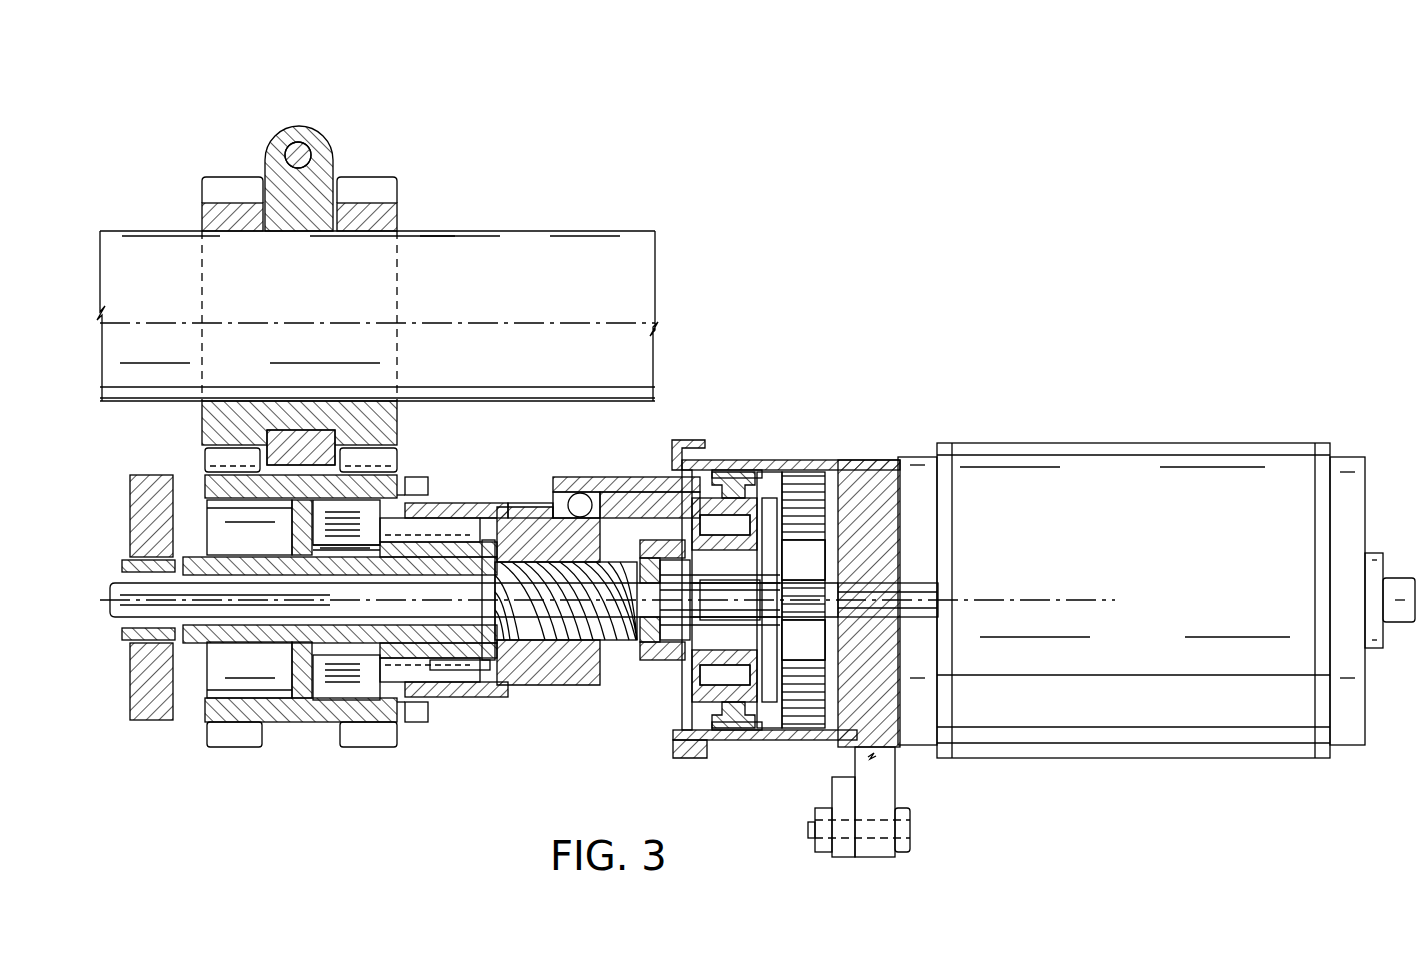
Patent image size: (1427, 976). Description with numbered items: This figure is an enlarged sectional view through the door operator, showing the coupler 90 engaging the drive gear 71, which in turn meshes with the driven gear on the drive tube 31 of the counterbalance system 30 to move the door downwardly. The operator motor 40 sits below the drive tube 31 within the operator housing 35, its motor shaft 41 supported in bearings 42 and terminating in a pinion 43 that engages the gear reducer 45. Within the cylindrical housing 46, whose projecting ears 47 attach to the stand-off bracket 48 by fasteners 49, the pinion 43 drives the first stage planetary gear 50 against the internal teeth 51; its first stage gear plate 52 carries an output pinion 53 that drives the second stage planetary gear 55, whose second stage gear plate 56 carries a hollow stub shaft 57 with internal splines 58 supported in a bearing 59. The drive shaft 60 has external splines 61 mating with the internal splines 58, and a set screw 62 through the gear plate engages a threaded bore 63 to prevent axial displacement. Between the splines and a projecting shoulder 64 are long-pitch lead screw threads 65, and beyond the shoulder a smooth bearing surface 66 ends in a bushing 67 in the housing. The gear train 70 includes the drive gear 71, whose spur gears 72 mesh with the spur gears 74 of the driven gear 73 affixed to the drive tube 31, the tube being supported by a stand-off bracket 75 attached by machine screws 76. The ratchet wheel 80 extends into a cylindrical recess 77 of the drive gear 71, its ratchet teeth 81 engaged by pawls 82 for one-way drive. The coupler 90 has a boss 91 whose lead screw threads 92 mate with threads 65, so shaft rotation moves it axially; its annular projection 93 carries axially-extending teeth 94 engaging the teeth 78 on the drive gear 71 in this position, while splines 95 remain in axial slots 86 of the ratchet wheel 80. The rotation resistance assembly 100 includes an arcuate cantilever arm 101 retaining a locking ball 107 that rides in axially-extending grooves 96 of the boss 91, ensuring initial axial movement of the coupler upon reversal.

The counterbalance system 30 is at (630, 229).
The drive tube 31 is at (568, 238).
The operator housing 35 is at (142, 705).
The operator motor 40 is at (1158, 440).
The motor shaft 41 is at (890, 586).
The bearings 42 is at (890, 568).
The pinion 43 is at (890, 615).
The gear reducer 45 is at (737, 745).
The housing 46 is at (727, 741).
The projecting ears 47 is at (880, 806).
The stand-off bracket 48 is at (838, 793).
The fasteners 49 is at (900, 840).
The first stage planetary gear 50 is at (812, 495).
The internal teeth 51 is at (765, 478).
The first stage gear plate 52 is at (770, 530).
The output pinion 53 is at (855, 530).
The second stage planetary gear 55 is at (737, 472).
The second stage gear plate 56 is at (716, 498).
The stub shaft 57 is at (667, 668).
The internal splines 58 is at (645, 650).
The bearing 59 is at (668, 555).
The drive shaft 60 is at (228, 620).
The external splines 61 is at (648, 548).
The set screw 62 is at (708, 600).
The threaded bore 63 is at (652, 552).
The shoulder 64 is at (548, 582).
The lead screw threads 65 is at (522, 573).
The bearing surface 66 is at (262, 618).
The bushing 67 is at (125, 632).
The gear train 70 is at (183, 455).
The drive gear 71 is at (302, 725).
The spur gears 72 is at (236, 742).
The driven gear 73 is at (398, 174).
The spur gears 74 is at (232, 182).
The stand-off bracket 75 is at (318, 132).
The machine screws 76 is at (302, 148).
The cylindrical recess 77 is at (399, 724).
The axially-extending teeth 78 is at (412, 500).
The ratchet wheel 80 is at (437, 532).
The ratchet teeth 81 is at (336, 658).
The pawls 82 is at (337, 517).
The axial slots 86 is at (467, 662).
The coupler 90 is at (495, 502).
The boss 91 is at (528, 525).
The lead screw threads 92 is at (528, 636).
The annular projection 93 is at (470, 503).
The axially-extending teeth 94 is at (420, 722).
The splines 95 is at (452, 700).
The axially-extending grooves 96 is at (583, 688).
The rotation resistance assembly 100 is at (578, 493).
The arcuate cantilever arm 101 is at (600, 492).
The locking ball 107 is at (575, 497).